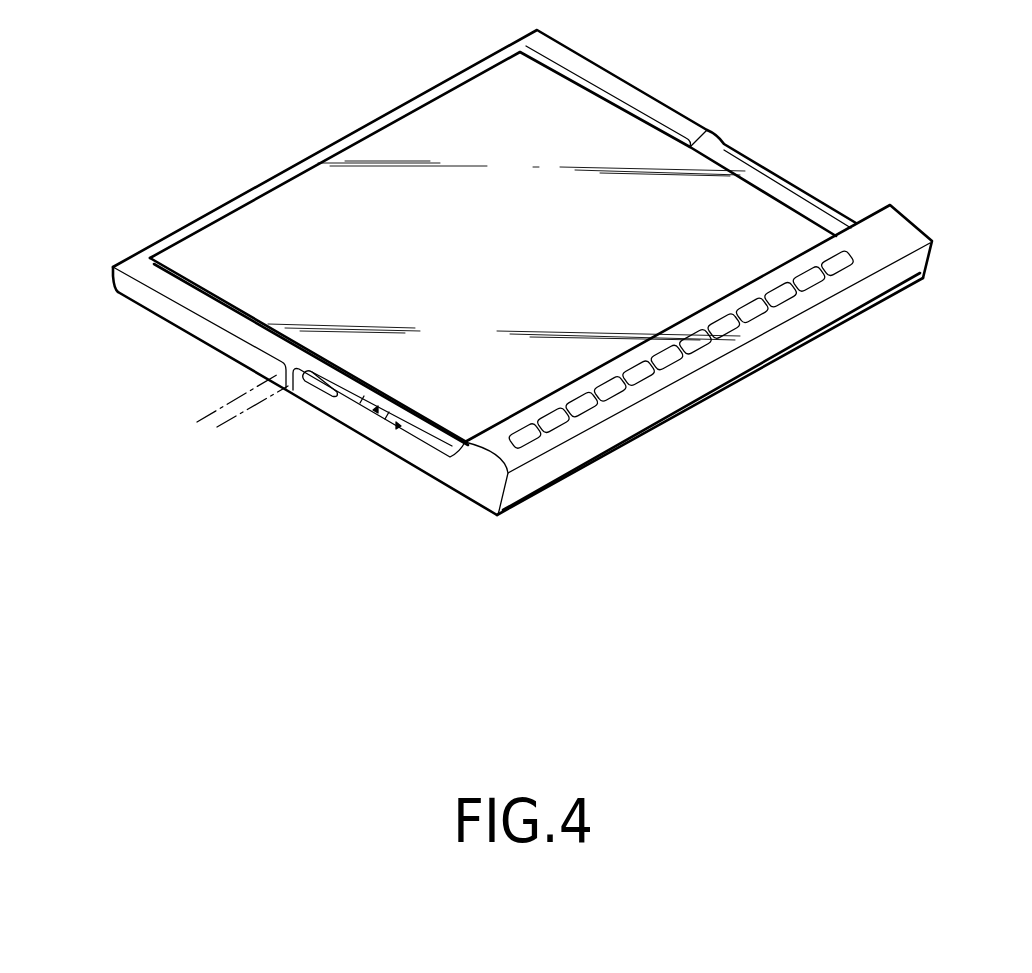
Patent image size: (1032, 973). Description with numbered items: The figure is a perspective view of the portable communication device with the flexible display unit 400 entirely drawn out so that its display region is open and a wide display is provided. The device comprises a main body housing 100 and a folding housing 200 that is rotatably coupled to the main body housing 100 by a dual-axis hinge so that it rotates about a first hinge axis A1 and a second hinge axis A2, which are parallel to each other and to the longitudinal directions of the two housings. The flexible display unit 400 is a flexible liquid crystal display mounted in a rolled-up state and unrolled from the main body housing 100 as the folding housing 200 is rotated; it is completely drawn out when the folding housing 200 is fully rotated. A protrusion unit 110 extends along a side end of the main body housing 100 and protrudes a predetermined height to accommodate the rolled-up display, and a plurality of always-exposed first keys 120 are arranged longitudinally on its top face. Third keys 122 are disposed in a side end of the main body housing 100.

The main body housing 100 is at (641, 398).
The protrusion unit 110 is at (490, 482).
The first keys 120 is at (642, 375).
The third keys 122 is at (363, 402).
The folding housing 200 is at (122, 310).
The flexible display unit 400 is at (233, 285).
The first hinge axis A1 is at (243, 413).
The second hinge axis A2 is at (235, 400).